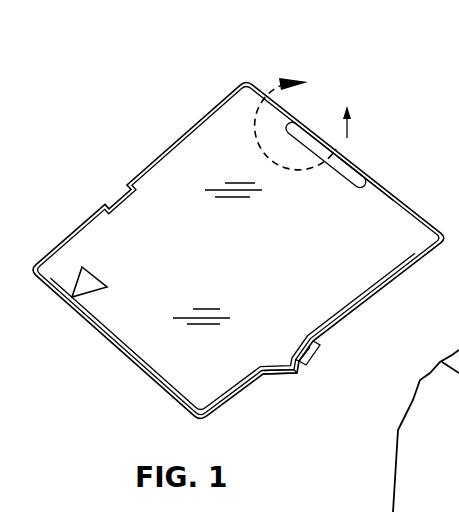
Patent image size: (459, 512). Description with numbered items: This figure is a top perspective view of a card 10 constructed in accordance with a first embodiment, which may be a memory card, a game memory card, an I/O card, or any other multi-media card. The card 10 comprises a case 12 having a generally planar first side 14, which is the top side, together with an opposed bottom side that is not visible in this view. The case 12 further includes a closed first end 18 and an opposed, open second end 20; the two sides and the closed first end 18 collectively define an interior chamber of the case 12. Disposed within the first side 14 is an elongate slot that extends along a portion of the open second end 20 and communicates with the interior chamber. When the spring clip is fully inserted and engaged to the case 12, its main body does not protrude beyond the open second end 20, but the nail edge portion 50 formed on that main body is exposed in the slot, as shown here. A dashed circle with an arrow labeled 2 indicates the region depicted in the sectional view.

The card 10 is at (124, 148).
The case 12 is at (122, 368).
The first side 14 is at (323, 316).
The closed first end 18 is at (77, 321).
The open second end 20 is at (289, 111).
The nail edge portion 50 is at (347, 157).
The section indicator 2 is at (303, 123).